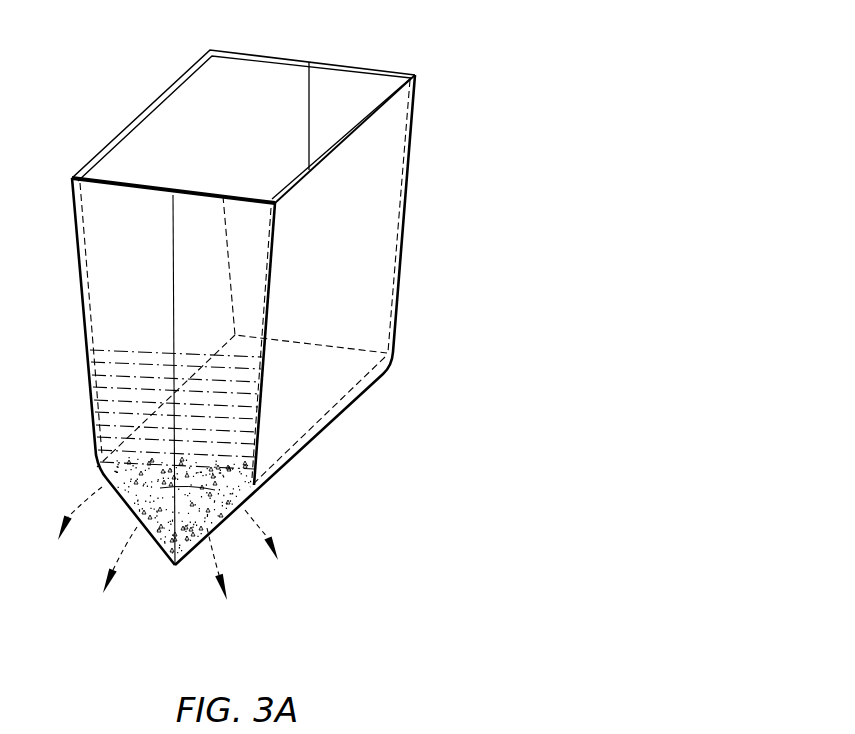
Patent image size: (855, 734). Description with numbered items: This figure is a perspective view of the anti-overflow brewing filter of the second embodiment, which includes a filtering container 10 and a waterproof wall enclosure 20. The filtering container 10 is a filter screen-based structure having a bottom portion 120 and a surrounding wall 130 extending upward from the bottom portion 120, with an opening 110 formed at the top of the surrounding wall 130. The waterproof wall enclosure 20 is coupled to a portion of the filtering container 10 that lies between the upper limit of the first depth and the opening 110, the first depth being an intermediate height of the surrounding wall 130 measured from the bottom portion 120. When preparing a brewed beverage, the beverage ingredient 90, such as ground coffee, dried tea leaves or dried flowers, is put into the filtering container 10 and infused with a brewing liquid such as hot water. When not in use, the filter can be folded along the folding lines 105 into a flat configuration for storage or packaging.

The filtering container 10 is at (252, 78).
The opening 110 is at (342, 76).
The waterproof wall enclosure 20 is at (388, 193).
The folding lines 105 is at (173, 233).
The surrounding wall 130 is at (110, 316).
The beverage ingredient 90 is at (98, 470).
The bottom portion 120 is at (175, 567).